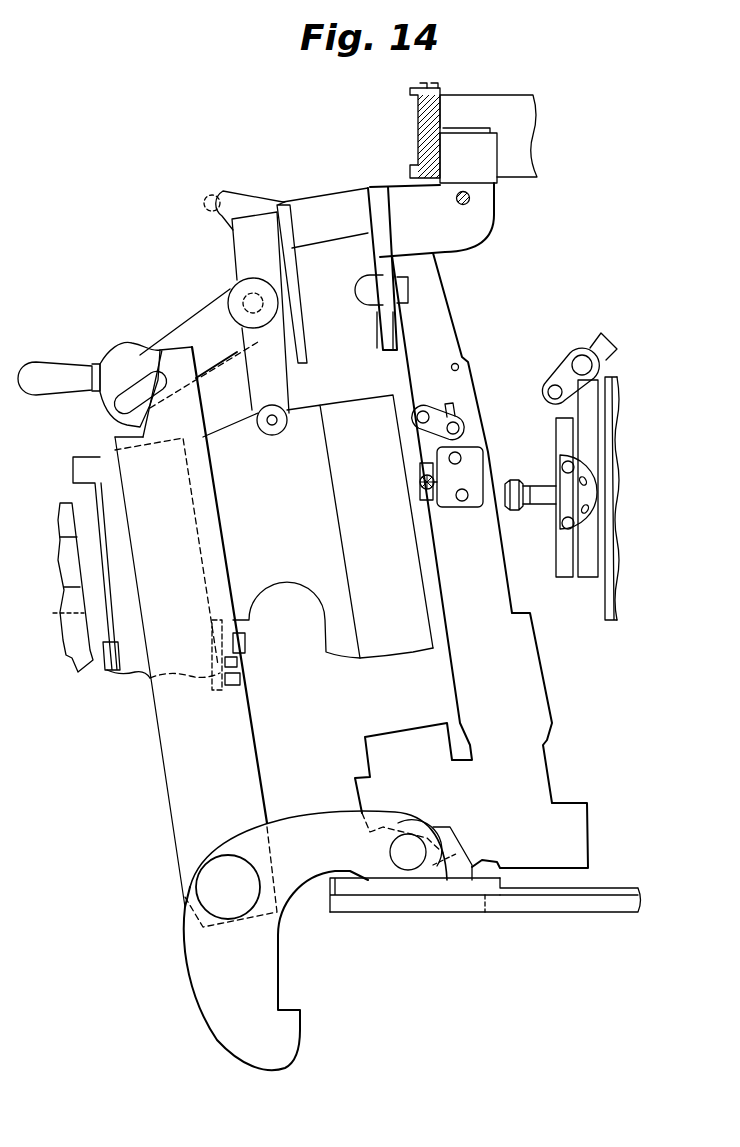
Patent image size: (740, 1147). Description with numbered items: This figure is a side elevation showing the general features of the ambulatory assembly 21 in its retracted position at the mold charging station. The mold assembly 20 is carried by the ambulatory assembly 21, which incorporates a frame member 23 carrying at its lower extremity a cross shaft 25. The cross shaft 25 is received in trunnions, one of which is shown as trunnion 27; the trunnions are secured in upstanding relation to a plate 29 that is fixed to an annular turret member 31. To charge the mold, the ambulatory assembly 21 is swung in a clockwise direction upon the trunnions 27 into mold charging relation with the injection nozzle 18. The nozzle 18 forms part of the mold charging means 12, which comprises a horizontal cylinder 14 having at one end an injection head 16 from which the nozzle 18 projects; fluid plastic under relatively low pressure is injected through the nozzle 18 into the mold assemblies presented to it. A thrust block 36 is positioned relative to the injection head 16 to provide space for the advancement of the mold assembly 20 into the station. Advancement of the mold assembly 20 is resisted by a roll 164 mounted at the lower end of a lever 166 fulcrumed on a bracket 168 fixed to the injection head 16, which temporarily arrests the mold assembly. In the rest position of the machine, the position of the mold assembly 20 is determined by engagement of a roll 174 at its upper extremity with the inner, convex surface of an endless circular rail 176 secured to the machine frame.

The endless circular rail 176 is at (420, 129).
The roll 174 is at (490, 160).
The lever 166 is at (601, 338).
The roll 164 is at (546, 388).
The bracket 168 is at (598, 393).
The nozzle 18 is at (513, 481).
The mold assembly 20 is at (333, 392).
The injection head 16 is at (564, 578).
The mold charging means 12 is at (589, 493).
The horizontal cylinder 14 is at (612, 620).
The thrust block 36 is at (73, 632).
The frame member 23 is at (532, 722).
The ambulatory assembly 21 is at (290, 708).
The trunnion 27 is at (458, 854).
The plate 29 is at (358, 887).
The cross shaft 25 is at (413, 862).
The annular turret member 31 is at (506, 907).